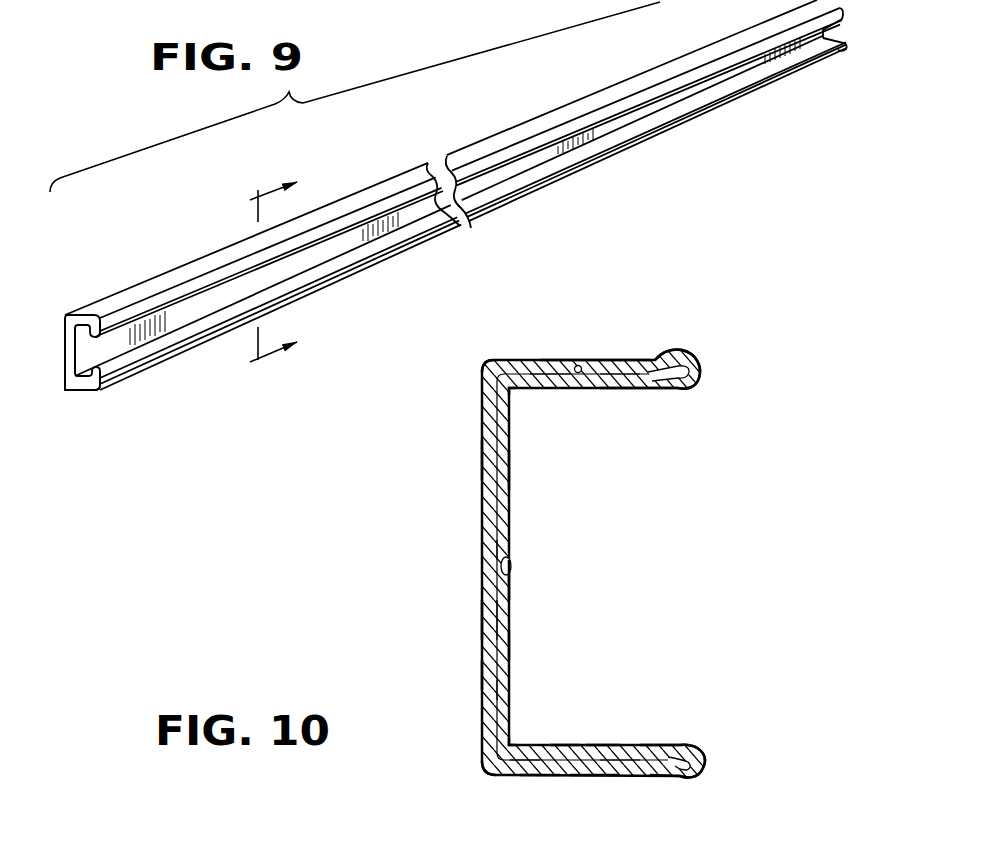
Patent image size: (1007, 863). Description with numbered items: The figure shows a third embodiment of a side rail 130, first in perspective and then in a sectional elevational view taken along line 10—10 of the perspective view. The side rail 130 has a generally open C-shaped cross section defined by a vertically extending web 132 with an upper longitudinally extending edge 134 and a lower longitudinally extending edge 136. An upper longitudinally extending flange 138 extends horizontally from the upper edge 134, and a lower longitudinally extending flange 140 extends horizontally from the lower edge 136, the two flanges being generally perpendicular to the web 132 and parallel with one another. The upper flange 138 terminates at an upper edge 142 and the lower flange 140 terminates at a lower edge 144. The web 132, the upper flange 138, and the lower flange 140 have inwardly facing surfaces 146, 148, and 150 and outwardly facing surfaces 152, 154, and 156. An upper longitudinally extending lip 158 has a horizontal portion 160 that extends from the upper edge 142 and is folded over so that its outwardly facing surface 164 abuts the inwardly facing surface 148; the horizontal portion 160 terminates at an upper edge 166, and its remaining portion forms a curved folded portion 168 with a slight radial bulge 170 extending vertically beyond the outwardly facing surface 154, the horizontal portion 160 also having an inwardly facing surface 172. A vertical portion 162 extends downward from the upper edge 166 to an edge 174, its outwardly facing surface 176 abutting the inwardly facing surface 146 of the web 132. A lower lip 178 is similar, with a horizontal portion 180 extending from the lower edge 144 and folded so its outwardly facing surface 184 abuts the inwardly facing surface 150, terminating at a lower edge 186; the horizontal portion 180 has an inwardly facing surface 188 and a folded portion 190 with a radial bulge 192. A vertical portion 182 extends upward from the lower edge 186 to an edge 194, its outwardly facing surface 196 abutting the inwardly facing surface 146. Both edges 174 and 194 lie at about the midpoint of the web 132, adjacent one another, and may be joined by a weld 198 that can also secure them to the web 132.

In FIG. 9, the section line 10 is at (259, 281).
In FIG. 9, the side rail 130 is at (203, 233).
In FIG. 10, the side rail 130 is at (412, 572).
In FIG. 9, the web 132 is at (64, 332).
In FIG. 10, the web 132 is at (492, 612).
In FIG. 10, the upper longitudinally extending edge 134 is at (486, 358).
In FIG. 10, the lower longitudinally extending edge 136 is at (485, 765).
In FIG. 9, the upper longitudinally extending flange 138 is at (84, 317).
In FIG. 10, the upper longitudinally extending flange 138 is at (610, 360).
In FIG. 9, the lower longitudinally extending flange 140 is at (77, 382).
In FIG. 10, the lower longitudinally extending flange 140 is at (592, 763).
In FIG. 10, the upper edge 142 is at (657, 356).
In FIG. 10, the lower edge 144 is at (664, 774).
In FIG. 10, the inwardly facing surface 146 is at (500, 648).
In FIG. 10, the inwardly facing surface 148 is at (545, 378).
In FIG. 10, the inwardly facing surface 150 is at (562, 758).
In FIG. 10, the outwardly facing surface 152 is at (486, 669).
In FIG. 10, the outwardly facing surface 154 is at (558, 360).
In FIG. 10, the outwardly facing surface 156 is at (548, 776).
In FIG. 9, the upper longitudinally extending lip 158 is at (110, 338).
In FIG. 10, the upper longitudinally extending lip 158 is at (628, 386).
In FIG. 10, the horizontal portion 160 is at (610, 390).
In FIG. 9, the vertical portion 162 is at (83, 348).
In FIG. 10, the vertical portion 162 is at (505, 474).
In FIG. 10, the outwardly facing surface 164 is at (582, 373).
In FIG. 10, the upper edge 166 is at (505, 380).
In FIG. 10, the curved folded portion 168 is at (693, 387).
In FIG. 10, the radial bulge 170 is at (684, 349).
In FIG. 10, the inwardly facing surface 172 is at (660, 390).
In FIG. 10, the edge 174 is at (502, 572).
In FIG. 10, the outwardly facing surface 176 is at (494, 461).
In FIG. 9, the lower lip 178 is at (90, 392).
In FIG. 10, the lower lip 178 is at (585, 735).
In FIG. 10, the horizontal portion 180 is at (612, 746).
In FIG. 9, the vertical portion 182 is at (100, 386).
In FIG. 10, the vertical portion 182 is at (505, 620).
In FIG. 10, the outwardly facing surface 184 is at (532, 762).
In FIG. 10, the lower edge 186 is at (500, 751).
In FIG. 10, the inwardly facing surface 188 is at (648, 746).
In FIG. 10, the folded portion 190 is at (703, 760).
In FIG. 10, the radial bulge 192 is at (689, 779).
In FIG. 10, the edge 194 is at (496, 557).
In FIG. 10, the outwardly facing surface 196 is at (495, 688).
In FIG. 10, the weld 198 is at (512, 565).